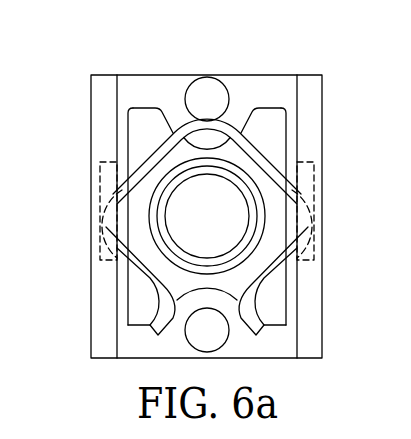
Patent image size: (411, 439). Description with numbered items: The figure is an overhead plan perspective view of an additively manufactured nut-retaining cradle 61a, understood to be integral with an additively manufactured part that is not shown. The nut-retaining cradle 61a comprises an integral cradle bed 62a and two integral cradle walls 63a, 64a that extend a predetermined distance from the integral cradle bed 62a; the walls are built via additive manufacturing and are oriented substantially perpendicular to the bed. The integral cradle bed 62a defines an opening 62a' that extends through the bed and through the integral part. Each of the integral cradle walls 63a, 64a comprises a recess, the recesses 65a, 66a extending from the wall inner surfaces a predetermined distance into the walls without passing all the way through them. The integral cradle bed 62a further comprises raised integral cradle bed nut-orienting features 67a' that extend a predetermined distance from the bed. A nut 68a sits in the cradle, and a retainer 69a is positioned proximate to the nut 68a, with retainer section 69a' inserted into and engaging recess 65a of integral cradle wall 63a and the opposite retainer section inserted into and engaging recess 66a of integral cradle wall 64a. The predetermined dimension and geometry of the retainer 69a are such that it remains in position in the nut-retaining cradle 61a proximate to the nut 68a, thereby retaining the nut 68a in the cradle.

The nut-retaining cradle 61a is at (163, 68).
The integral cradle bed 62a is at (220, 166).
The opening 62a' is at (207, 216).
The integral cradle wall 63a is at (104, 105).
The integral cradle wall 64a is at (307, 106).
The recess 65a is at (107, 178).
The recess 66a is at (307, 177).
The integral cradle bed nut-orienting feature 67a' is at (290, 346).
The nut 68a is at (145, 122).
The retainer 69a is at (249, 281).
The retainer section 69a' is at (63, 224).